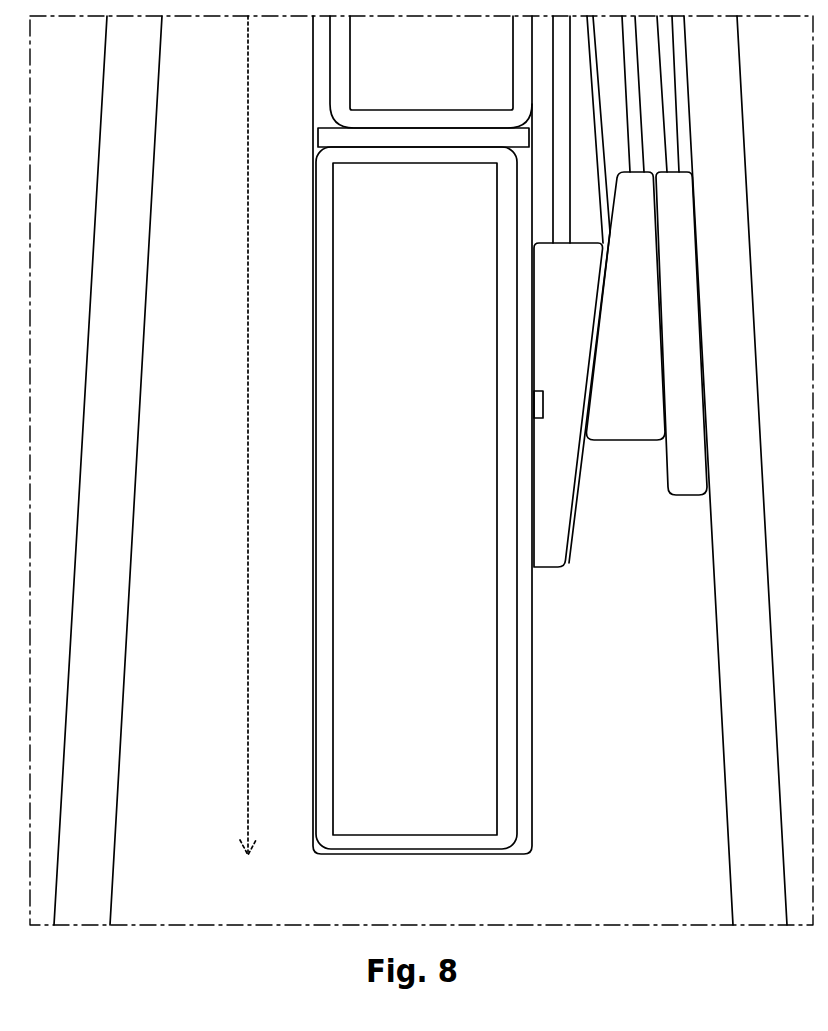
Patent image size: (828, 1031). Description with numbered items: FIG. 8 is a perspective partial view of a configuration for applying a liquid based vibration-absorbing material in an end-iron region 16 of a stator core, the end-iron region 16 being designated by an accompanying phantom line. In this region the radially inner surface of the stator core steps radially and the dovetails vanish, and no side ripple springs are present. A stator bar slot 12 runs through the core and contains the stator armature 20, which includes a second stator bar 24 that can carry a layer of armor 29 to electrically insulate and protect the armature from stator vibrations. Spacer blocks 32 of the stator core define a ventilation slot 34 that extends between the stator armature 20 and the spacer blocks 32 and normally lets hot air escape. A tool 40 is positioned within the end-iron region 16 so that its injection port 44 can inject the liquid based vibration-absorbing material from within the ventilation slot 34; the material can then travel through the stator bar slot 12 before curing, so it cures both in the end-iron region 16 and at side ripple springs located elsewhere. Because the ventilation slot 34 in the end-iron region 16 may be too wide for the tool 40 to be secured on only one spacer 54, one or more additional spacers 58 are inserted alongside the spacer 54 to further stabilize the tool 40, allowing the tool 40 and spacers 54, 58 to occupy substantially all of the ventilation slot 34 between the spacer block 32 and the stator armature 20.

The stator bar slot 12 is at (525, 681).
The end-iron region 16 is at (247, 770).
The stator armature 20 is at (332, 148).
The second stator bar 24 is at (377, 777).
The armor 29 is at (325, 423).
The spacer block 32 is at (420, 470).
The ventilation slot 34 is at (688, 573).
The tool 40 is at (555, 494).
The injection port 44 is at (535, 410).
The spacer 54 is at (637, 340).
The additional spacer 58 is at (690, 462).